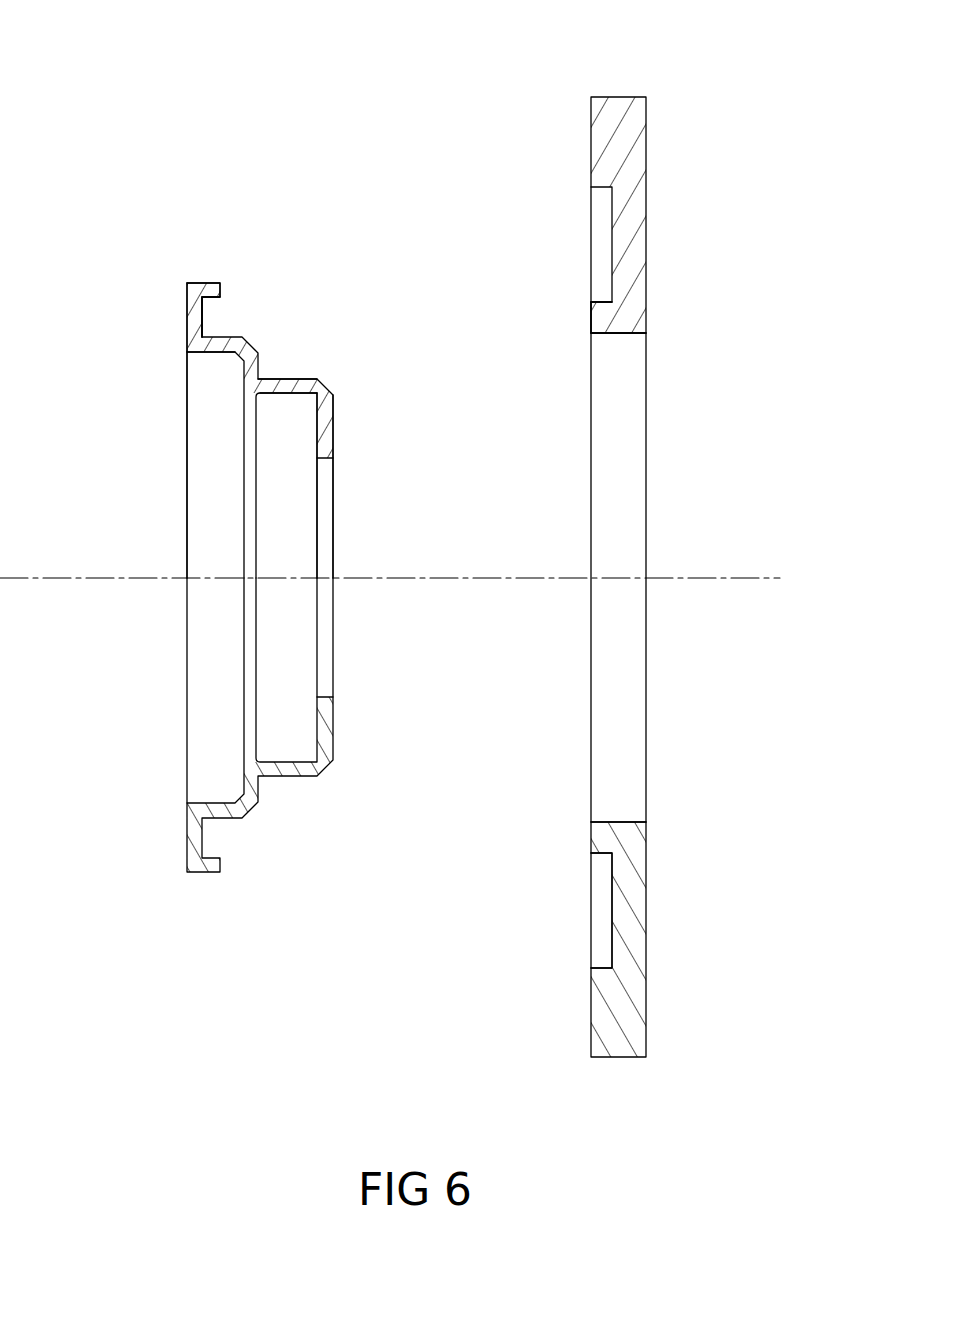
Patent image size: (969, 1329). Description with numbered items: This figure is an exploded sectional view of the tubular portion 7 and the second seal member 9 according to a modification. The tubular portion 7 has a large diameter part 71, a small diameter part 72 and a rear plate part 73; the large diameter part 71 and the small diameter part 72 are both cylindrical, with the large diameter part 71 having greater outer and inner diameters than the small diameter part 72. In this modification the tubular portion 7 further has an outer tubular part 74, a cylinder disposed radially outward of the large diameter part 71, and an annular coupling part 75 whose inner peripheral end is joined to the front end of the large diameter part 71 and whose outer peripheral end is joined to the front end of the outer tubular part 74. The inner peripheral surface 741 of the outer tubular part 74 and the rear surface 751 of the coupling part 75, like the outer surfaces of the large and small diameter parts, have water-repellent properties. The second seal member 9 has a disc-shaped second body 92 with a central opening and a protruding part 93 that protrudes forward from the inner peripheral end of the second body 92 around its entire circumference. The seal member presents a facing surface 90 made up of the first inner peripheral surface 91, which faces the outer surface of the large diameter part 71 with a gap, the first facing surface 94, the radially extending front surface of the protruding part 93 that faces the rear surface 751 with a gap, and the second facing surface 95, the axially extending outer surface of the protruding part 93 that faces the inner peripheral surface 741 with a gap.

The tubular portion 7 is at (158, 263).
The coupling part 75 is at (187, 318).
The outer tubular part 74 is at (207, 282).
The inner peripheral surface 741 is at (219, 303).
The rear surface 751 is at (203, 318).
The small diameter part 72 is at (288, 378).
The rear plate part 73 is at (333, 428).
The large diameter part 71 is at (210, 353).
The second seal member 9 is at (577, 97).
The facing surface 90 is at (635, 478).
The second facing surface 95 is at (598, 302).
The first facing surface 94 is at (590, 317).
The first inner peripheral surface 91 is at (626, 333).
The protruding part 93 is at (590, 837).
The second body 92 is at (609, 908).